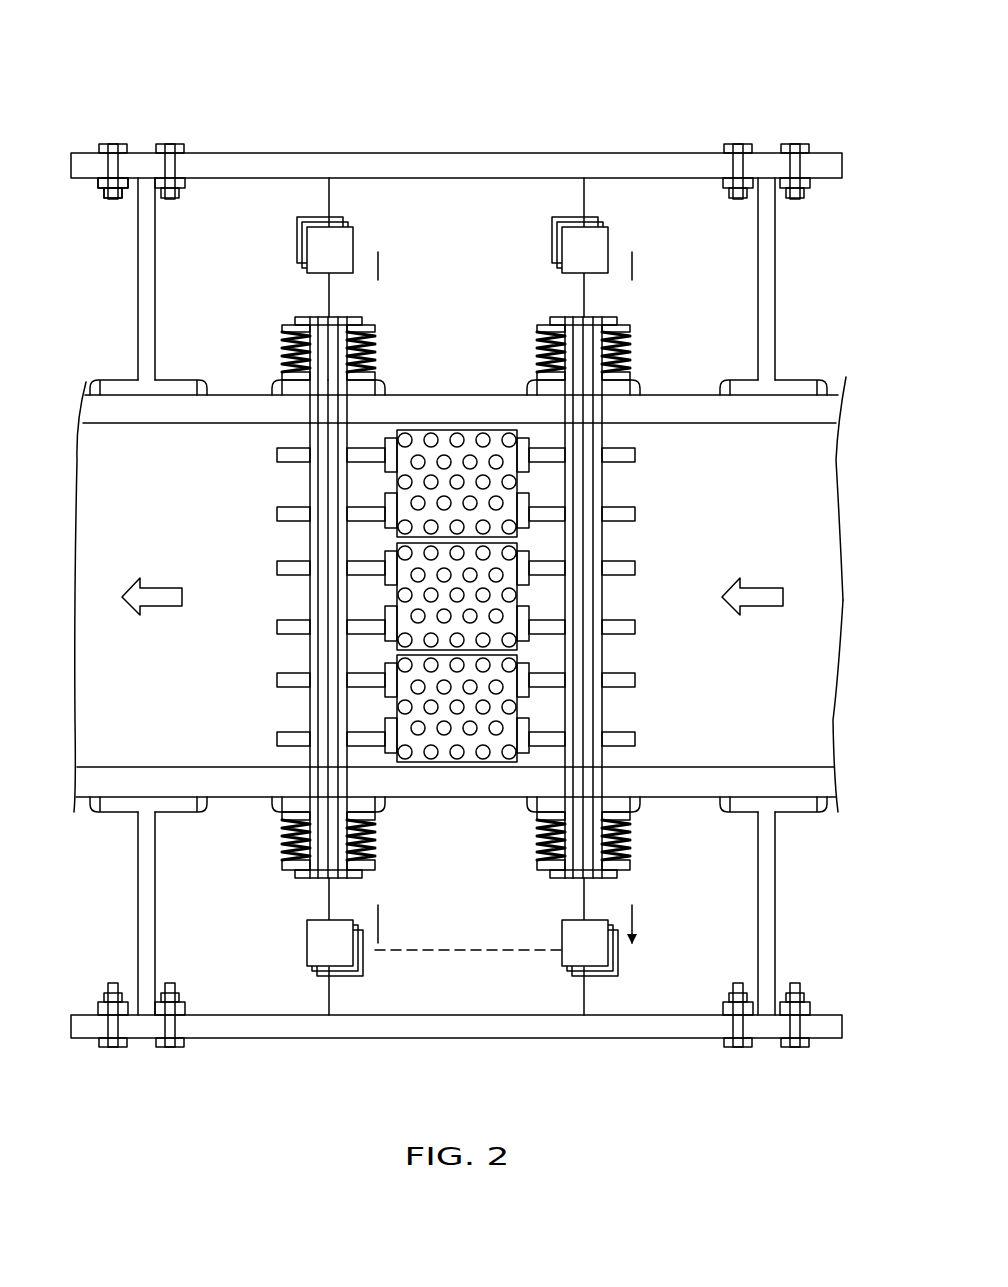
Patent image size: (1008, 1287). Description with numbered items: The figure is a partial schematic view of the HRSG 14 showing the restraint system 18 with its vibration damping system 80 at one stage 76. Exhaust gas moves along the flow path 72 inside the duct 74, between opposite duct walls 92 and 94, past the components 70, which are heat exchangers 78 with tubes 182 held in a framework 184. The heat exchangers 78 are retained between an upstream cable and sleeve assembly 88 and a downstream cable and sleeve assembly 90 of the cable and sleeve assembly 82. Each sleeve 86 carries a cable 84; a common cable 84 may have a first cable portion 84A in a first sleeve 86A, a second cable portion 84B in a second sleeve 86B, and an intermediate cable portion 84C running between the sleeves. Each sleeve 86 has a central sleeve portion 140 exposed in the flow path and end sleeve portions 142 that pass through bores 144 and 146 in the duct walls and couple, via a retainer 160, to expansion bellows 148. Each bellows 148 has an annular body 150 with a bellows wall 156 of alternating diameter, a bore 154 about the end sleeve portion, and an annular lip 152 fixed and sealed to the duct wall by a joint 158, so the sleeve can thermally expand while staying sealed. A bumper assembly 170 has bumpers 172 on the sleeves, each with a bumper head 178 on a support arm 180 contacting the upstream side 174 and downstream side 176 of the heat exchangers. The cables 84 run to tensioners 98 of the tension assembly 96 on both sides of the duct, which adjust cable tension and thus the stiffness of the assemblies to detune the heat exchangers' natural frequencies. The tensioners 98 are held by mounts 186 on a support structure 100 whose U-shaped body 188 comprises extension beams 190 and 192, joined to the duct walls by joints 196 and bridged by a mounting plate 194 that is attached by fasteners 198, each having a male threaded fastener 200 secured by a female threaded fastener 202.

The HRSG 14 is at (848, 922).
The restraint system 18 is at (480, 117).
The components 70 is at (493, 405).
The flow path 72 is at (150, 590).
The duct 74 is at (845, 725).
The stage 76 is at (415, 1070).
The heat exchanger 78 is at (400, 480).
The vibration damping system 80 is at (440, 195).
The cable and sleeve assembly 82 is at (682, 708).
The cable 84 is at (329, 290).
The first cable portion 84A is at (328, 660).
The second cable portion 84B is at (590, 440).
The intermediate cable portion 84C is at (435, 950).
The sleeve 86 is at (310, 760).
The first sleeve 86A is at (318, 680).
The second sleeve 86B is at (603, 492).
The upstream cable and sleeve assembly 88 is at (676, 491).
The downstream cable and sleeve assembly 90 is at (235, 490).
The duct wall 92 is at (840, 395).
The duct wall 94 is at (840, 805).
The tension assembly 96 is at (180, 915).
The tensioner 98 is at (353, 242).
The support structure 100 is at (775, 100).
The central sleeve portion 140 is at (310, 650).
The end sleeve portion 142 is at (300, 318).
The bore 144 is at (313, 420).
The bore 146 is at (320, 778).
The expansion bellows 148 is at (455, 293).
The annular body 150 is at (375, 330).
The annular lip 152 is at (368, 385).
The bore 154 is at (340, 347).
The bellows wall 156 is at (372, 350).
The joint 158 is at (387, 390).
The retainer 160 is at (357, 318).
The bumper assembly 170 is at (255, 630).
The bumper 172 is at (275, 600).
The upstream side 174 is at (517, 762).
The downstream side 176 is at (400, 762).
The bumper head 178 is at (530, 550).
The support arm 180 is at (636, 566).
The tube 182 is at (500, 735).
The heat exchanger framework 184 is at (517, 655).
The mount 186 is at (329, 200).
The U-shaped body 188 is at (700, 153).
The extension beam 190 is at (775, 280).
The extension beam 192 is at (138, 230).
The mounting plate 194 is at (185, 152).
The joint 196 is at (90, 390).
The fastener 198 is at (118, 140).
The male threaded fastener 200 is at (110, 178).
The female threaded fastener 202 is at (102, 190).